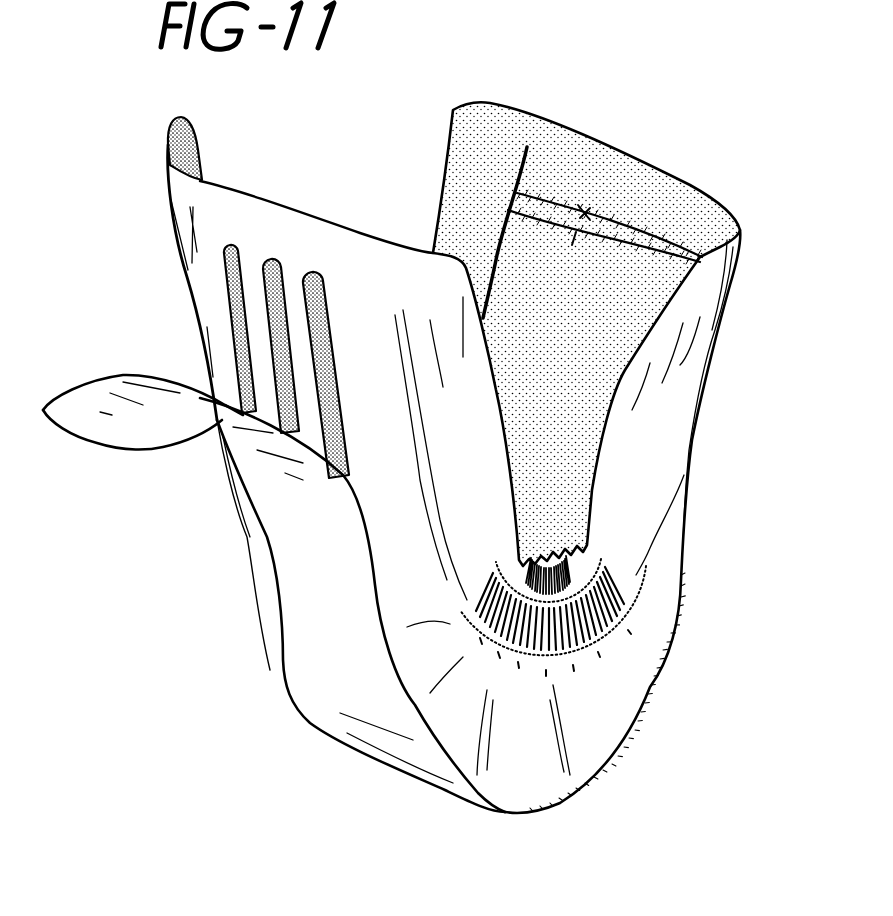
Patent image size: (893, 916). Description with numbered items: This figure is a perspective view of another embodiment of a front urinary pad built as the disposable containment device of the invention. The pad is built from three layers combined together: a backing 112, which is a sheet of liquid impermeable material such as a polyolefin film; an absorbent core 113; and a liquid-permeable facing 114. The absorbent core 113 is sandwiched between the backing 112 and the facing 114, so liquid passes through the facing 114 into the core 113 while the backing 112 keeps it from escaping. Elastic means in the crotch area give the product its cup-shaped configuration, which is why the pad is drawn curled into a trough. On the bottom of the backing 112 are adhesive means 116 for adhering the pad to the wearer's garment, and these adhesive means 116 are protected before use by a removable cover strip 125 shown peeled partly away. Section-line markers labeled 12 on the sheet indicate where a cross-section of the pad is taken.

The disposable absorbent article 12 is at (753, 121).
The backing 112 is at (195, 196).
The absorbent core 113 is at (600, 192).
The liquid-permeable facing 114 is at (530, 267).
The adhesive means 116 is at (313, 303).
The removable cover strip 125 is at (132, 432).